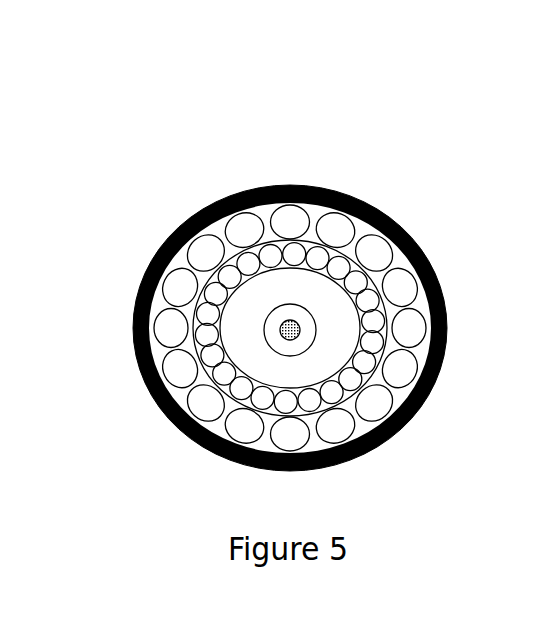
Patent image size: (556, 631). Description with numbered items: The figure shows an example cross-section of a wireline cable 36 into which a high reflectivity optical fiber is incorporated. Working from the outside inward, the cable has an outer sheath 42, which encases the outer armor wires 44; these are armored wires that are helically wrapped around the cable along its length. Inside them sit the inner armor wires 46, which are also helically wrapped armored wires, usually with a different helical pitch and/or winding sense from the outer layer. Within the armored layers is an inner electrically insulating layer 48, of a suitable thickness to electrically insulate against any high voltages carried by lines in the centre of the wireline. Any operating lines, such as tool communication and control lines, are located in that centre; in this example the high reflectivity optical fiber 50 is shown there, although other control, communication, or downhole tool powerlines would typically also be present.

The wireline cable 36 is at (217, 138).
The outer sheath 42 is at (377, 215).
The outer armor wires 44 is at (183, 260).
The inner armor wires 46 is at (385, 345).
The inner electrically insulating layer 48 is at (323, 357).
The high reflectivity optical fiber 50 is at (278, 331).